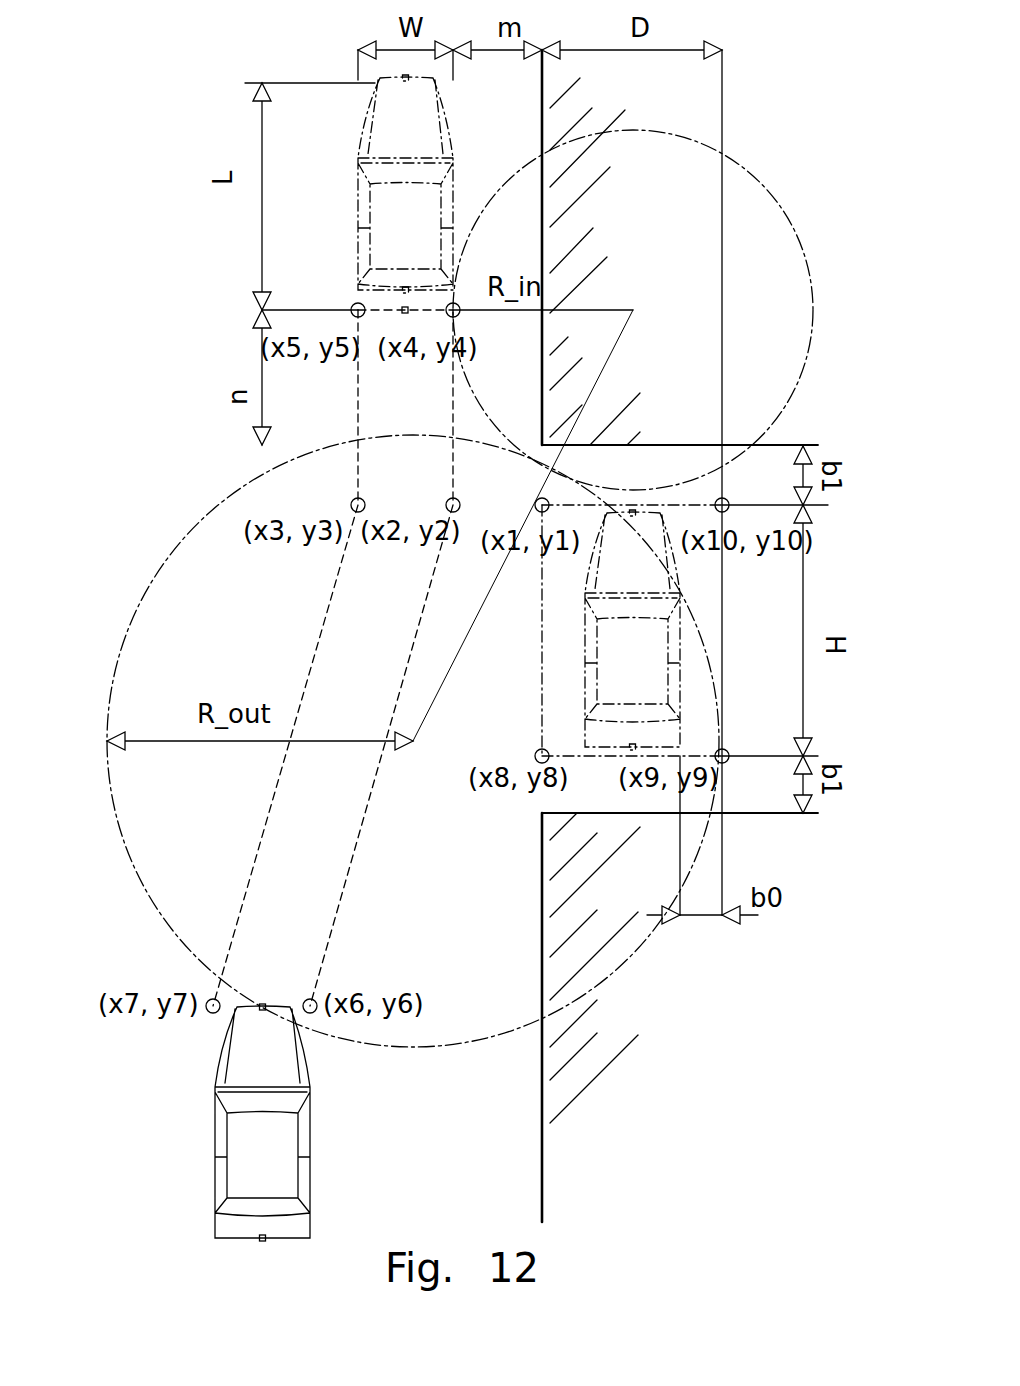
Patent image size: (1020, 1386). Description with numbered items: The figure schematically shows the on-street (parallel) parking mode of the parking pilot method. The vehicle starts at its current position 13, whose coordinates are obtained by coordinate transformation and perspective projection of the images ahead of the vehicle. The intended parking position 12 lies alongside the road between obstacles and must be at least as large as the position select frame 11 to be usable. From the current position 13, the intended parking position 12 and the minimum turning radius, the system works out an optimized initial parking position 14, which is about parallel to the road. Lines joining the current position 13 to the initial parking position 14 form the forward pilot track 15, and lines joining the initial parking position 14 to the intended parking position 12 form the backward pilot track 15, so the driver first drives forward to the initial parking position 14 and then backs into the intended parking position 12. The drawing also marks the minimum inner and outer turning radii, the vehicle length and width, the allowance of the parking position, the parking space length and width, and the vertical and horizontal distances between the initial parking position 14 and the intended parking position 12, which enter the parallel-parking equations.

The position select frame 11 is at (593, 758).
The intended parking position 12 is at (724, 760).
The current position 13 is at (215, 1183).
The initial parking position 14 is at (358, 227).
The pilot track 15 is at (280, 775).